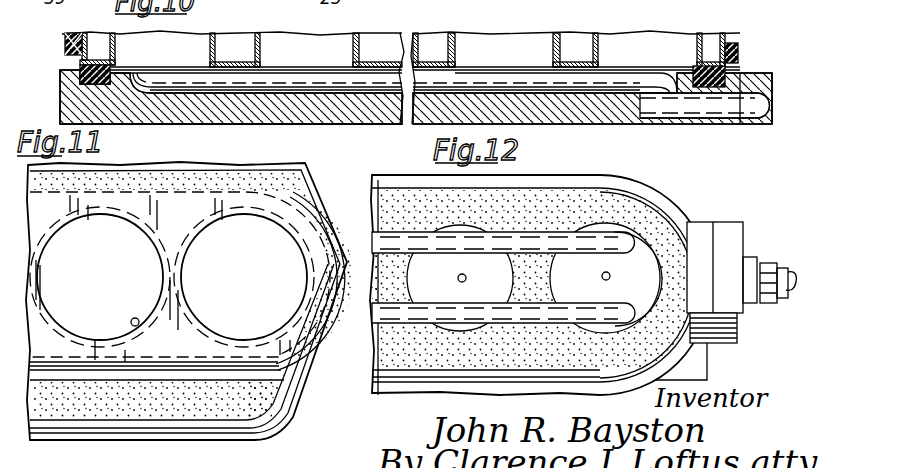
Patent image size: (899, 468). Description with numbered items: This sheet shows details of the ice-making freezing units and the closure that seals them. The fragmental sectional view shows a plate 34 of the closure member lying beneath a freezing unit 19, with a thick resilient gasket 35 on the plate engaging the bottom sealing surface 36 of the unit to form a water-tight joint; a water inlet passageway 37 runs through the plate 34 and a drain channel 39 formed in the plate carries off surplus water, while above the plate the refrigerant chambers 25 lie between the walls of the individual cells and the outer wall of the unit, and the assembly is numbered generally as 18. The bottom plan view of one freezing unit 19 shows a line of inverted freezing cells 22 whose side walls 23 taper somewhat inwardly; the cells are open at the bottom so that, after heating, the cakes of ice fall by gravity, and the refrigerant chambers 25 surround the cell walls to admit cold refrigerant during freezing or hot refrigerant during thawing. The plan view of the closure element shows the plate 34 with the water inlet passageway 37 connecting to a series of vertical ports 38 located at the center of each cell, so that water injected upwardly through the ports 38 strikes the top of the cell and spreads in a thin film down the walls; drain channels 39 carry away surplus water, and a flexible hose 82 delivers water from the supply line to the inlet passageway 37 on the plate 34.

In FIG. 10, the heater assembly 18 is at (572, 62).
In FIG. 11, the freezing unit 19 is at (296, 422).
In FIG. 11, the inverted freezing cell 22 is at (90, 273).
In FIG. 10, the side wall 23 is at (115, 50).
In FIG. 11, the side wall 23 is at (227, 323).
In FIG. 10, the refrigerant chamber 25 is at (80, 34).
In FIG. 10, the plate 34 is at (588, 125).
In FIG. 12, the plate 34 is at (678, 207).
In FIG. 10, the resilient gasket 35 is at (80, 83).
In FIG. 12, the resilient gasket 35 is at (457, 357).
In FIG. 10, the bottom sealing surface 36 is at (349, 62).
In FIG. 11, the bottom sealing surface 36 is at (277, 340).
In FIG. 10, the water inlet passageway 37 is at (174, 62).
In FIG. 12, the vertical port 38 is at (466, 277).
In FIG. 10, the drain channel 39 is at (335, 82).
In FIG. 12, the drain channel 39 is at (517, 279).
In FIG. 12, the flexible hose 82 is at (790, 270).